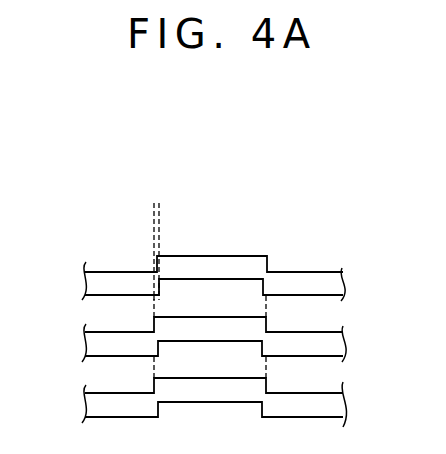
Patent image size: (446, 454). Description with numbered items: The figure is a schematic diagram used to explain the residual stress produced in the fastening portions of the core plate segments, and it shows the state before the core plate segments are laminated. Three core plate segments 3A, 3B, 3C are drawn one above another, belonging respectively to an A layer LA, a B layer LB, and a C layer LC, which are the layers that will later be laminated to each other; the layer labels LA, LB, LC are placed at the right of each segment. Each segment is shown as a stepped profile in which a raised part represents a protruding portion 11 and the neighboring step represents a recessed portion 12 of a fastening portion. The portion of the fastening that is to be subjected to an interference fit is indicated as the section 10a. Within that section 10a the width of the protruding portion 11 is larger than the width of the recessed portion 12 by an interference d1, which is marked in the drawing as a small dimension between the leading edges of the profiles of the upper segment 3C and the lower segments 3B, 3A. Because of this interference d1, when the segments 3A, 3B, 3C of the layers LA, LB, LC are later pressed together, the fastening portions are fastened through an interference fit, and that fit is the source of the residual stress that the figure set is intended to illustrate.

The section to be subjected to an interference fit 10a is at (250, 195).
The protruding portion 11 is at (228, 256).
The recessed portion 12 is at (265, 283).
The core plate segment 3C is at (84, 273).
The core plate segment 3B is at (85, 337).
The core plate segment 3A is at (85, 400).
The C layer LC is at (340, 274).
The B layer LB is at (343, 334).
The A layer LA is at (343, 395).
The interference d1 is at (154, 210).